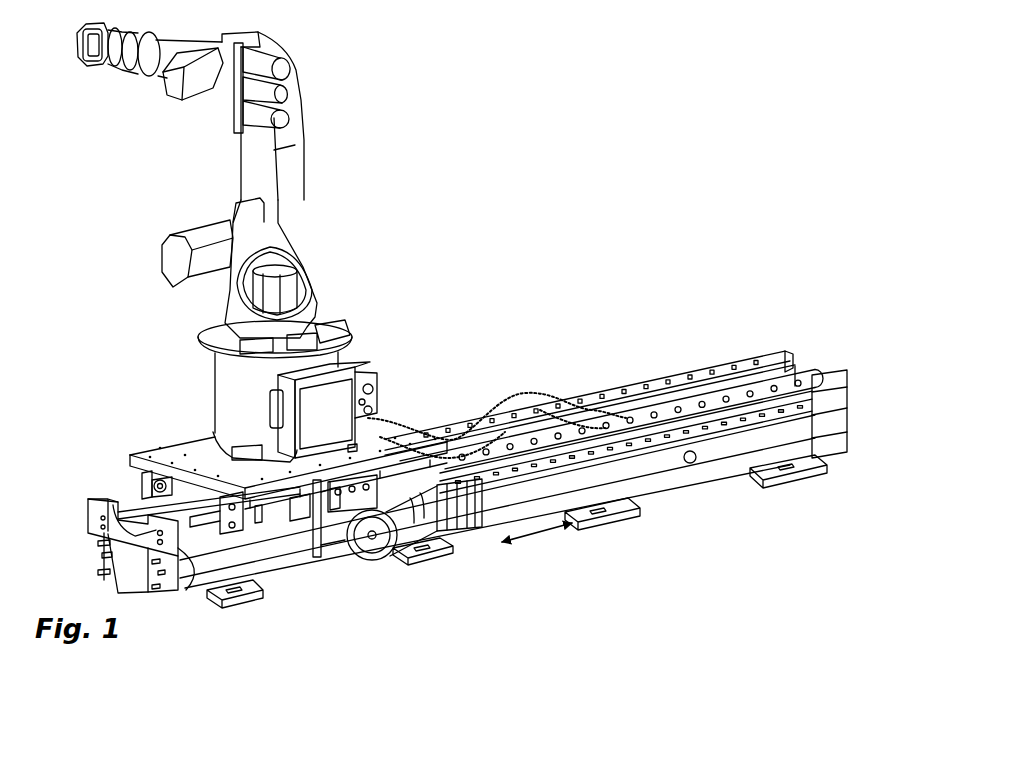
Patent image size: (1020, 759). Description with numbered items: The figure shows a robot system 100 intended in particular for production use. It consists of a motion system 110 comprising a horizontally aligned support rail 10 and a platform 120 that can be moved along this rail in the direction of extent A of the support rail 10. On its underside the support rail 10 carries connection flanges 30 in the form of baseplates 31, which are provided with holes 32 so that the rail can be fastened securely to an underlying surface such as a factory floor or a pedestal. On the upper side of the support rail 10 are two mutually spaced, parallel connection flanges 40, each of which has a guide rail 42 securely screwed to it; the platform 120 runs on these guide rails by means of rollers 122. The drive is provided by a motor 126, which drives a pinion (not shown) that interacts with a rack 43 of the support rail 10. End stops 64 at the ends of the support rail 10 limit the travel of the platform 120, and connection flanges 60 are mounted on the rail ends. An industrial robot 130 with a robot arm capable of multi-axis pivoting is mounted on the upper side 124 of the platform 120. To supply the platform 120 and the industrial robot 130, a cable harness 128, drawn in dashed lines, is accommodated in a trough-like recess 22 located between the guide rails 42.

The robot system 100 is at (592, 124).
The industrial robot 130 is at (315, 153).
The motion system 110 is at (512, 358).
The platform 120 is at (380, 401).
The upper side of the platform 124 is at (190, 452).
The rollers 122 is at (148, 488).
The cable harness 128 is at (592, 411).
The motor 126 is at (381, 541).
The trough-like recess 22 is at (130, 520).
The end stops 64 is at (100, 508).
The connection flanges mounted on the ends 60 is at (112, 551).
The support rail 10 is at (543, 470).
The connection flanges 30 is at (557, 561).
The baseplates 31 is at (243, 593).
The holes 32 is at (433, 553).
The connection flanges 40 is at (652, 398).
The guide rail 42 is at (753, 357).
The rack 43 is at (777, 413).
The direction of extent A is at (552, 530).